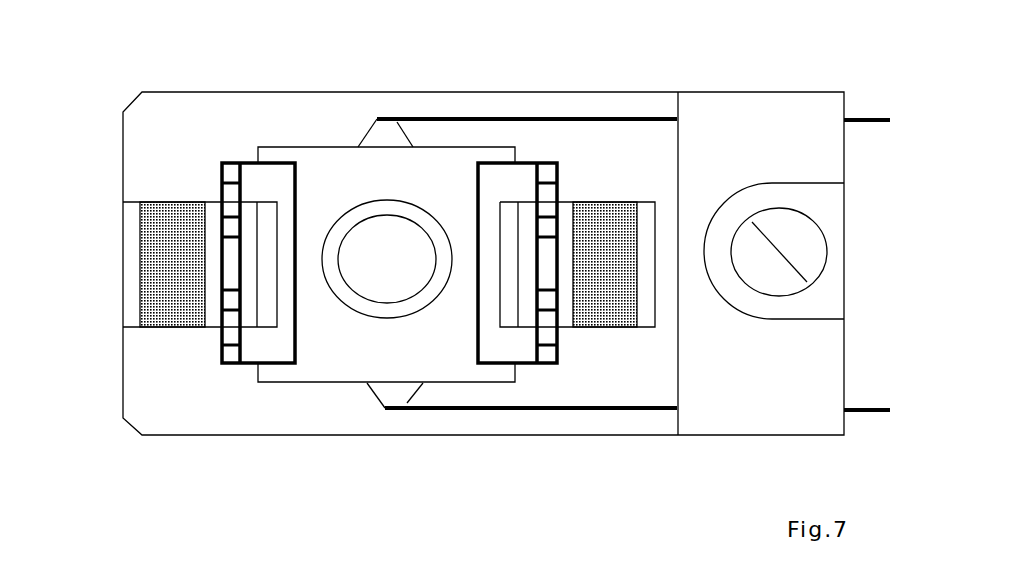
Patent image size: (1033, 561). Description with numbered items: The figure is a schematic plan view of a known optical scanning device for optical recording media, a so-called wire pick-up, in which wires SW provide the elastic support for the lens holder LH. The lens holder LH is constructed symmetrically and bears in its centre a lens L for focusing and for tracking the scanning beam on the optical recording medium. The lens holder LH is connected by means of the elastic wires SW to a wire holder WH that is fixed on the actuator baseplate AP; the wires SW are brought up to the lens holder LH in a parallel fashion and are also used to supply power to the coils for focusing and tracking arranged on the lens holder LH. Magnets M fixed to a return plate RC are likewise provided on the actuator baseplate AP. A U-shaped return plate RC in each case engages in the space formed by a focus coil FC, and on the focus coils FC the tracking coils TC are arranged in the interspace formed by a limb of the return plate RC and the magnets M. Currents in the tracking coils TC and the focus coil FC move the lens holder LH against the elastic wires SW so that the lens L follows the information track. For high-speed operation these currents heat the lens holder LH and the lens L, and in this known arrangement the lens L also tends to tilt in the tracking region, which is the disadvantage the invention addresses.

The tracking coil TC is at (230, 163).
The focus coil FC is at (497, 160).
The return plate RC is at (215, 225).
The magnet M is at (170, 330).
The wire SW is at (582, 113).
The lens holder LH is at (377, 355).
The lens L is at (390, 249).
The actuator baseplate AP is at (552, 425).
The wire holder WH is at (826, 355).